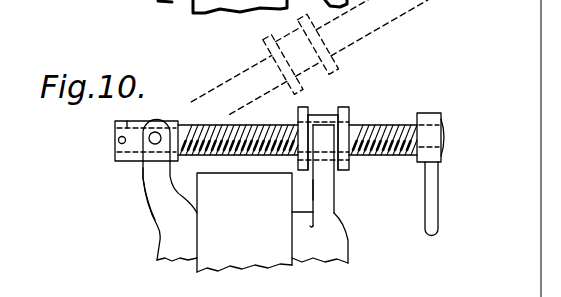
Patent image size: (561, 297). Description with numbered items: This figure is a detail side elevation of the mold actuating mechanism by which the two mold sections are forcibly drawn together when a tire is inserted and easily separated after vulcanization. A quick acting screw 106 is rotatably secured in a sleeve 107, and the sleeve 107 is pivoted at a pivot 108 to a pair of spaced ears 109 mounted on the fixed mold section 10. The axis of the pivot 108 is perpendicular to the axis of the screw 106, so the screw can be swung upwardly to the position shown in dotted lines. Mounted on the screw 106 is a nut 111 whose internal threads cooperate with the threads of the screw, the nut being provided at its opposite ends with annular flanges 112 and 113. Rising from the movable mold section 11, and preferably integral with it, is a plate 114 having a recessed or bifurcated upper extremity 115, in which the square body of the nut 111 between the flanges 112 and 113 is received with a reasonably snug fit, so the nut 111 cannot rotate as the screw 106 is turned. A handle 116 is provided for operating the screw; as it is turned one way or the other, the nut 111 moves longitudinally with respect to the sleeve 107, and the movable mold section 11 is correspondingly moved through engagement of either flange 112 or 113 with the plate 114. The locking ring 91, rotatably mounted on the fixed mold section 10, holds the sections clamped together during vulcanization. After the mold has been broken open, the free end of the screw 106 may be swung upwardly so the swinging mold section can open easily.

The fixed mold section 10 is at (168, 248).
The movable mold section 11 is at (335, 247).
The locking ring 91 is at (237, 255).
The quick acting screw 106 is at (247, 132).
The sleeve 107 is at (135, 163).
The pivot 108 is at (156, 132).
The spaced ears 109 is at (150, 175).
The nut 111 is at (325, 115).
The annular flange 112 is at (304, 108).
The annular flange 113 is at (325, 137).
The plate 114 is at (325, 190).
The bifurcated upper extremity 115 is at (341, 119).
The handle 116 is at (427, 218).